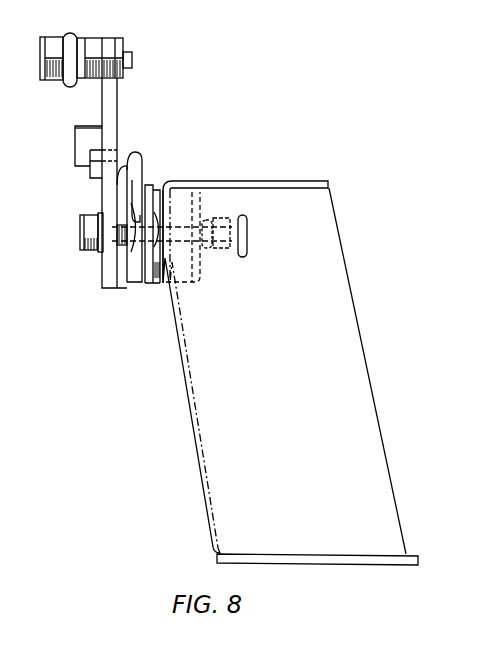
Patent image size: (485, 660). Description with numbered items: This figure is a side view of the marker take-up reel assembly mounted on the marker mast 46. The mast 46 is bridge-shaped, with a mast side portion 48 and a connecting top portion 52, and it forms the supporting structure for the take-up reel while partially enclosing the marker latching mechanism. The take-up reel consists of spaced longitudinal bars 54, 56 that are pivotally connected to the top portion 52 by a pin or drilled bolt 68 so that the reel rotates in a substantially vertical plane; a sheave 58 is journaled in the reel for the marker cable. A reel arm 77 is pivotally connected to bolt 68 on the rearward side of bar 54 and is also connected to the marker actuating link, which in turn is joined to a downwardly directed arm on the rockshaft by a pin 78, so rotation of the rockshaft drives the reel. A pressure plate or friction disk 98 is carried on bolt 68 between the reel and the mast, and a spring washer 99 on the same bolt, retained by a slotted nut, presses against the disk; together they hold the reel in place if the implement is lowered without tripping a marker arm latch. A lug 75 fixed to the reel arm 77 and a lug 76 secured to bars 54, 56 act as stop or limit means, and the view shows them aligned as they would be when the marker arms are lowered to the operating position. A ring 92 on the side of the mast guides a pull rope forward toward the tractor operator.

The marker mast 46 is at (303, 153).
The mast side portion 48 is at (283, 391).
The connecting top portion 52 is at (245, 181).
The longitudinal bar 54 is at (122, 190).
The longitudinal bar 56 is at (148, 183).
The sheave 58 is at (138, 235).
The pin or drilled bolt 68 is at (80, 232).
The lug 75 is at (75, 143).
The lug 76 is at (137, 152).
The reel arm 77 is at (118, 109).
The pin 78 is at (133, 61).
The ring 92 is at (248, 250).
The pressure plate or friction disk 98 is at (164, 181).
The spring washer 99 is at (205, 252).